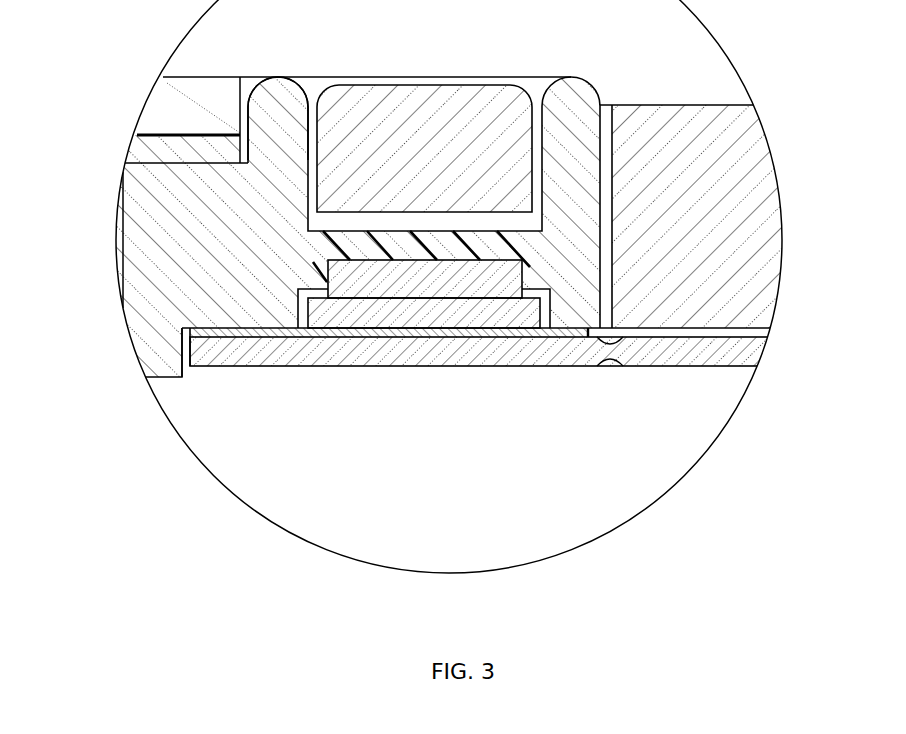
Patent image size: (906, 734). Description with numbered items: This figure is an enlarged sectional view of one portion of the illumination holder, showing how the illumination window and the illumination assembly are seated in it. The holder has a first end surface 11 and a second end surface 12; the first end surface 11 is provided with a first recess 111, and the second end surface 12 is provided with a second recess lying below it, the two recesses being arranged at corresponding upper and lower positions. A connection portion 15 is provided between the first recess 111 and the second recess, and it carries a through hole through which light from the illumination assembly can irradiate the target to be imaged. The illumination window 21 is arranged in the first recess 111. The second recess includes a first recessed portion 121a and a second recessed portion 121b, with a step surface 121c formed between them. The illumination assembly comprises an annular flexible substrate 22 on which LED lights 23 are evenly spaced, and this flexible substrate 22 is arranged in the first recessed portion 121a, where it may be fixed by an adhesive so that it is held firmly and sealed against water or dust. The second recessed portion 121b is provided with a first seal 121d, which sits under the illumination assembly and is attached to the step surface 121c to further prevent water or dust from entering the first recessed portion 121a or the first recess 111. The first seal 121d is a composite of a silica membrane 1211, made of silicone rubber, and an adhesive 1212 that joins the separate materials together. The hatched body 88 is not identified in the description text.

The first end surface 11 is at (525, 76).
The first recess 111 is at (310, 127).
The second end surface 12 is at (155, 378).
The first recessed portion 121a is at (302, 302).
The second recessed portion 121b is at (188, 380).
The step surface 121c is at (188, 366).
The first seal 121d is at (435, 497).
The silica membrane 1211 is at (489, 353).
The adhesive 1212 is at (441, 332).
The connection portion 15 is at (367, 247).
The illumination window 21 is at (458, 108).
The flexible substrate 22 is at (395, 315).
The LED lights 23 is at (508, 287).
The hatched body 88 is at (148, 205).